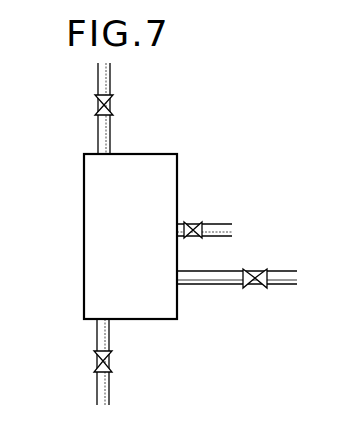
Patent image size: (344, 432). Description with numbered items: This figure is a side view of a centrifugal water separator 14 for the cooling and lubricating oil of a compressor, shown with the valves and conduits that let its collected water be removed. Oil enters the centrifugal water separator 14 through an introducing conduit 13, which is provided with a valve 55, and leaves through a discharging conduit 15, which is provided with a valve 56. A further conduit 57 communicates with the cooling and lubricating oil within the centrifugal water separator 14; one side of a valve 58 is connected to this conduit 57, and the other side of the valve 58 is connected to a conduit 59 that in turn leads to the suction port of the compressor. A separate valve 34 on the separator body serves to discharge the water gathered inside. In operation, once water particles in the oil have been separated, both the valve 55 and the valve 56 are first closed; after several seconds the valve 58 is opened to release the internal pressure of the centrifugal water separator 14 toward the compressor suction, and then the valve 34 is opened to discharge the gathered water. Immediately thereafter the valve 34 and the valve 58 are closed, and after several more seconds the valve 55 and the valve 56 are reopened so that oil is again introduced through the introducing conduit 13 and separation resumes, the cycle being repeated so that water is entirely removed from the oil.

The centrifugal water separator 14 is at (184, 162).
The conduit 57 is at (110, 137).
The valve 58 is at (108, 105).
The conduit 59 is at (97, 78).
The valve 34 is at (200, 222).
The introducing conduit 13 is at (220, 281).
The valve 55 is at (260, 269).
The discharging conduit 15 is at (96, 331).
The valve 56 is at (109, 360).